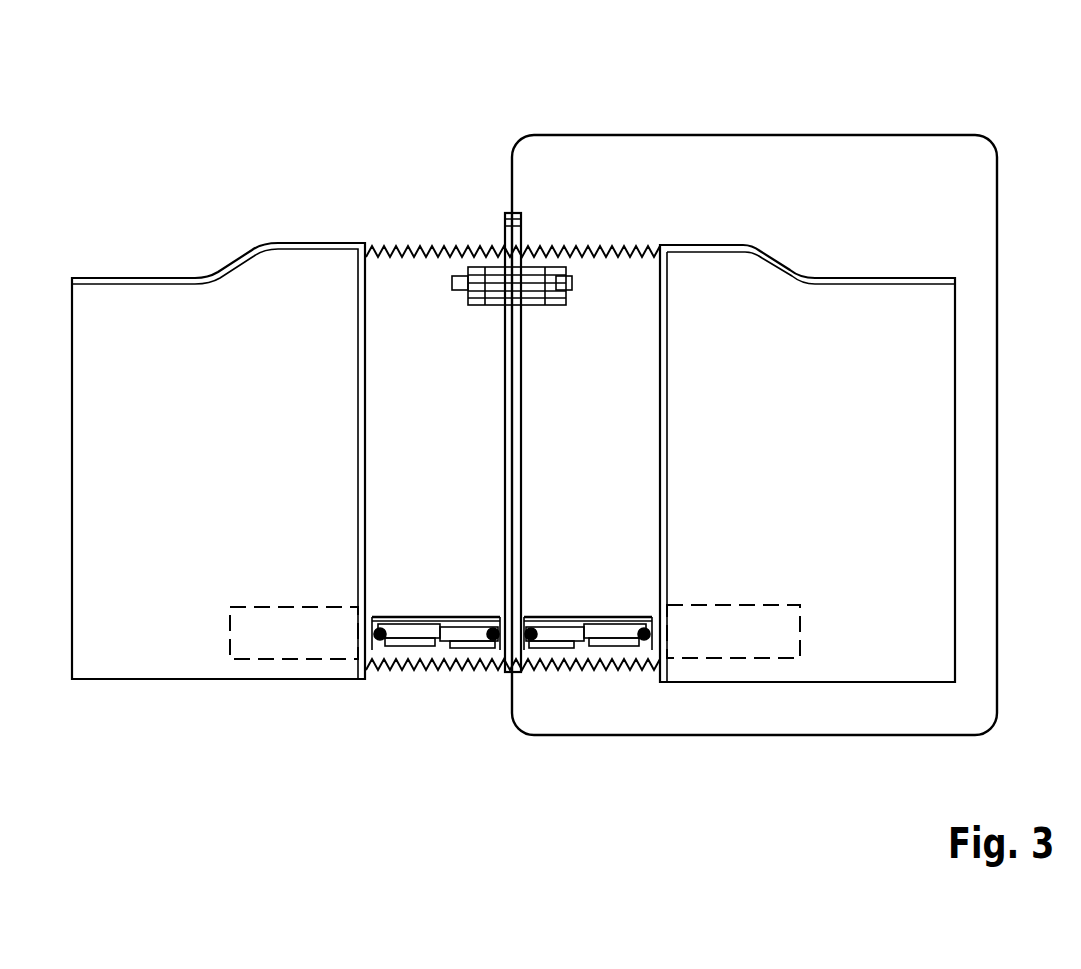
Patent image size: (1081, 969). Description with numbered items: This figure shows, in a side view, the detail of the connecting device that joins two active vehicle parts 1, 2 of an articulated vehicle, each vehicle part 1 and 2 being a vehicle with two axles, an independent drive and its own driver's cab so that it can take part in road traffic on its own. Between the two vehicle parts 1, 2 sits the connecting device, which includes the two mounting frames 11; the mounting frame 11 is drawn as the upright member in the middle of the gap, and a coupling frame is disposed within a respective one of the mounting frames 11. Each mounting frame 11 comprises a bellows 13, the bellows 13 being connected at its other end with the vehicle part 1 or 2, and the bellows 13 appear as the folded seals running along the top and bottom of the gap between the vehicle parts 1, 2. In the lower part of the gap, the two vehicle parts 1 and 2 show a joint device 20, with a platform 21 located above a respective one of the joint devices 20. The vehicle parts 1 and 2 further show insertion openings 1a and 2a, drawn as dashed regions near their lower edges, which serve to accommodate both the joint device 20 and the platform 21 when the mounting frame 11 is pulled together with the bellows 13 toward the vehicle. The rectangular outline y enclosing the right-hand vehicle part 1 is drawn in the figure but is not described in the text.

The active vehicle part 1 is at (895, 310).
The insertion opening 1a is at (750, 658).
The active vehicle part 2 is at (150, 305).
The insertion opening 2a is at (310, 660).
The mounting frame 11 is at (505, 237).
The bellows 13 is at (500, 188).
The joint device 20 is at (445, 655).
The platform 21 is at (438, 617).
The housing outline y is at (868, 735).